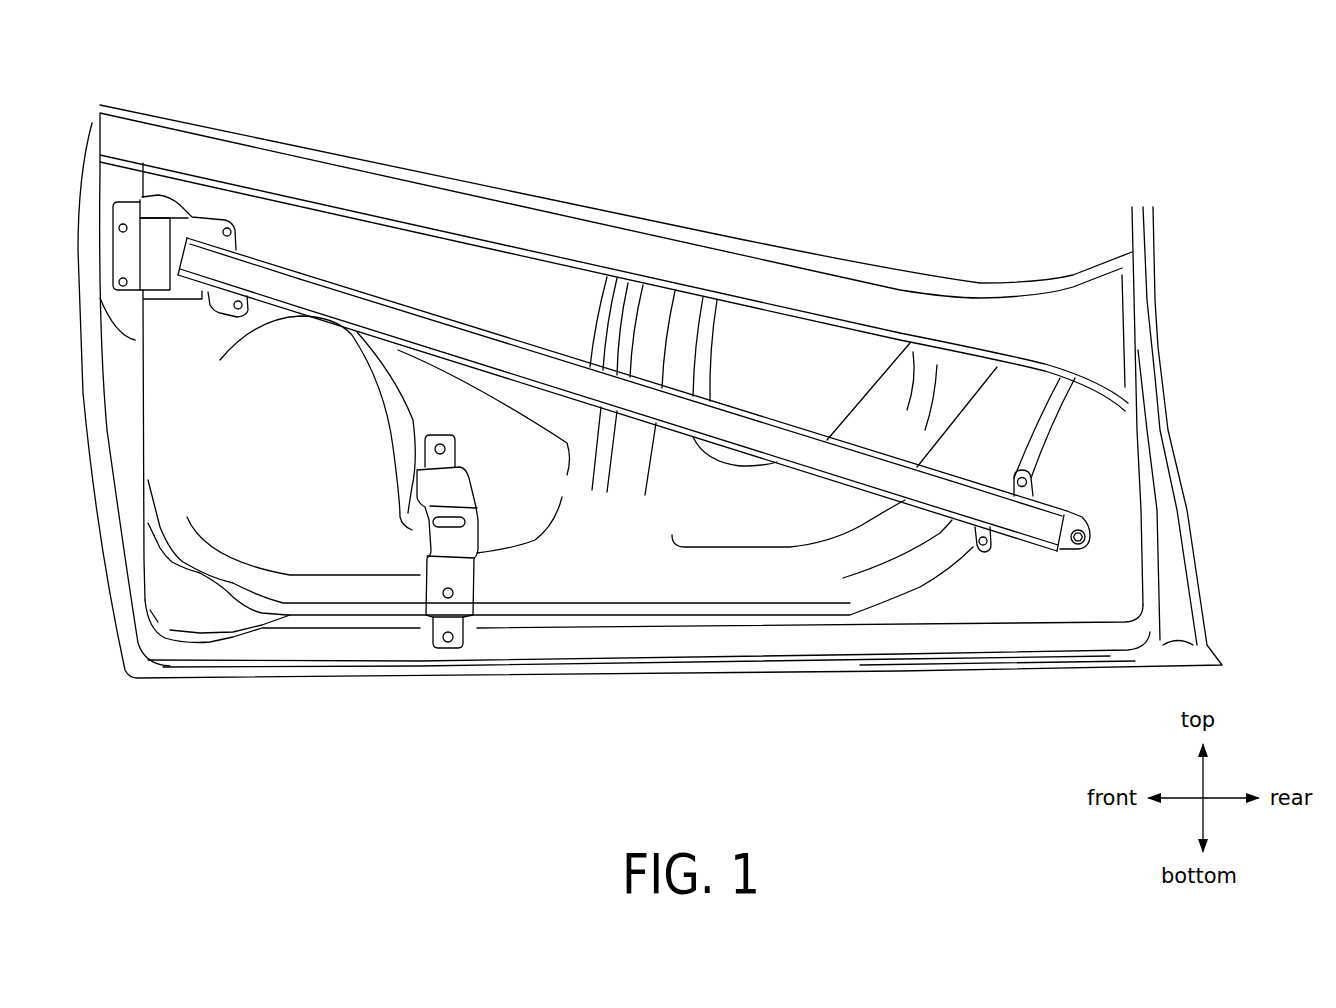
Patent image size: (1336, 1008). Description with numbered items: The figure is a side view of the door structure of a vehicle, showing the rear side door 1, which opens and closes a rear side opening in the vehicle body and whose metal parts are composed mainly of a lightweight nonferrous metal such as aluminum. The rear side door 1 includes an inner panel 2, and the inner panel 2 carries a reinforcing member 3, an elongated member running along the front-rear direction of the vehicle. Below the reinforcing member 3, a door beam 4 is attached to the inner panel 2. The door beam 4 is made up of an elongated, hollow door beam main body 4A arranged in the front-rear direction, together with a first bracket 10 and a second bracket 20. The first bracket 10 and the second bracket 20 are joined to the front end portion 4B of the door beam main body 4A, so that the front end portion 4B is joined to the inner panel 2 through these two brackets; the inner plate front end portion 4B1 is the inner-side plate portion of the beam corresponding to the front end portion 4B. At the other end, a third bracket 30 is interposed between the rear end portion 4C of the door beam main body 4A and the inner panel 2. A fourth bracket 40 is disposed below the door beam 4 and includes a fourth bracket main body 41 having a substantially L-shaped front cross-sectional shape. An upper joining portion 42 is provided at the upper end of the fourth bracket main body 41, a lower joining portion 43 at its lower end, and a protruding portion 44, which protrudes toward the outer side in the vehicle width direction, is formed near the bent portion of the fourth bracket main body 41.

The rear side door 1 is at (932, 160).
The inner panel 2 is at (777, 565).
The reinforcing member 3 is at (760, 273).
The door beam 4 is at (620, 399).
The door beam main body 4A is at (788, 440).
The front end portion 4B is at (237, 225).
The inner plate front end portion 4B1 is at (176, 245).
The rear end portion 4C is at (1023, 527).
The first bracket 10 is at (133, 238).
The second bracket 20 is at (205, 222).
The third bracket 30 is at (1066, 547).
The fourth bracket 40 is at (436, 567).
The fourth bracket main body 41 is at (470, 487).
The upper joining portion 42 is at (448, 437).
The lower joining portion 43 is at (430, 634).
The protruding portion 44 is at (417, 529).